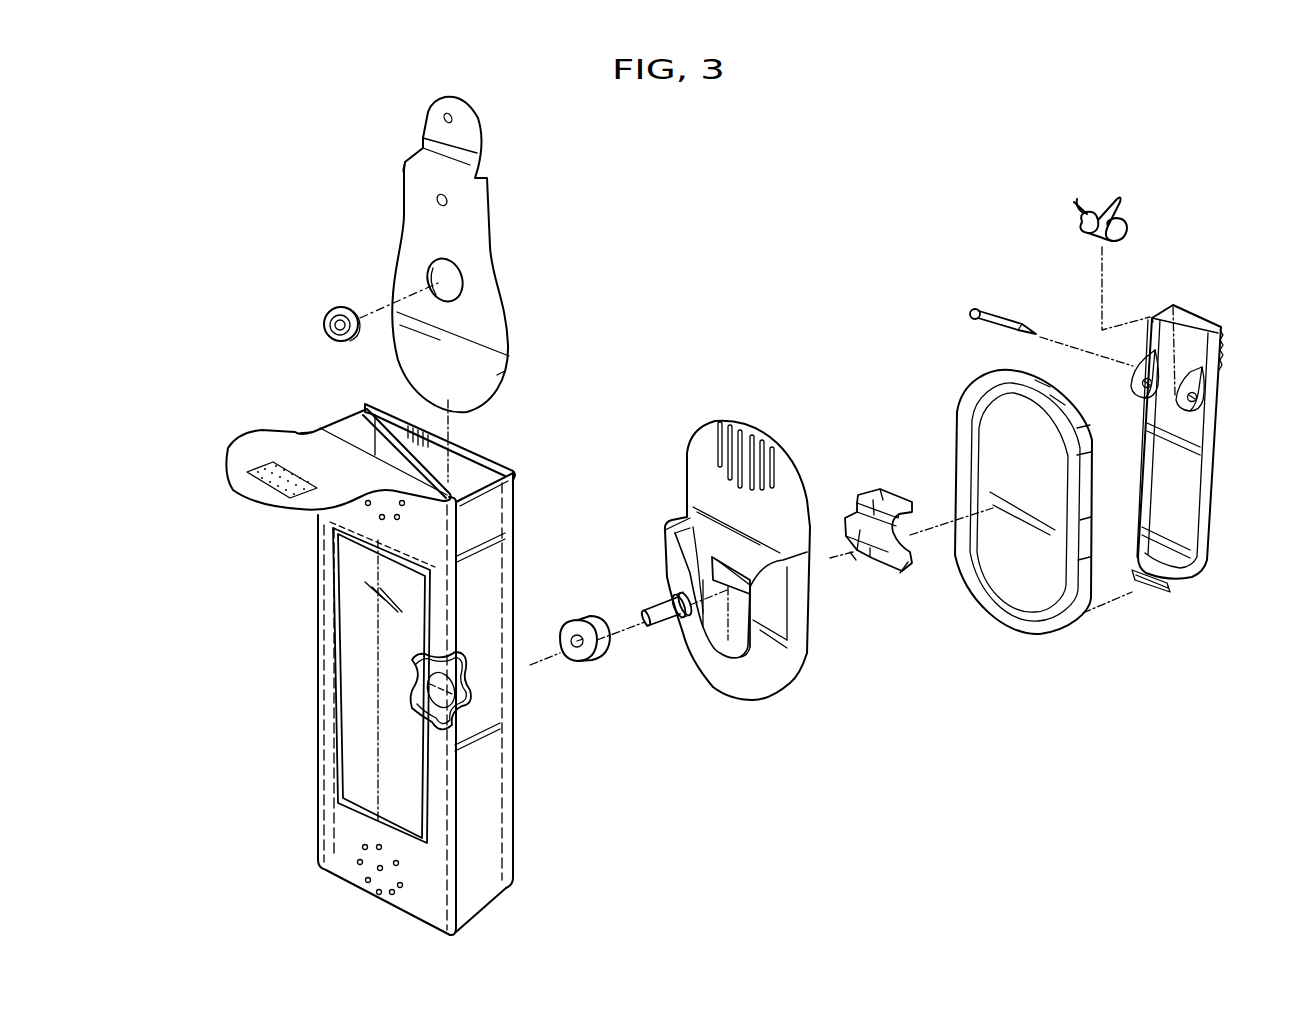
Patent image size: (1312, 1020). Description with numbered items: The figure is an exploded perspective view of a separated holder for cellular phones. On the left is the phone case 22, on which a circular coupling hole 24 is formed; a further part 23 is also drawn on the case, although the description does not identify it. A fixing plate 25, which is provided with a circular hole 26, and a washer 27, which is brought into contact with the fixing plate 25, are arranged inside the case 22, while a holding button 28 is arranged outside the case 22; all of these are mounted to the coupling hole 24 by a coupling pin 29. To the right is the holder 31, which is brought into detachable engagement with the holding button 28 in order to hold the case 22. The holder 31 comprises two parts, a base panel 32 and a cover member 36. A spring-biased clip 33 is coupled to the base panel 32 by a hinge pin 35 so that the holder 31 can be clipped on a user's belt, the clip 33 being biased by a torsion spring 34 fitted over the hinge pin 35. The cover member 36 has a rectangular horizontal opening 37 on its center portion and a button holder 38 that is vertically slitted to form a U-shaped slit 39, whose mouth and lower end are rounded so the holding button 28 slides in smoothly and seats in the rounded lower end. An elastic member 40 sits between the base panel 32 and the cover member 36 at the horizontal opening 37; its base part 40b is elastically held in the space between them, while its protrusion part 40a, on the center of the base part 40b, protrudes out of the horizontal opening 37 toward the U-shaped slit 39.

The phone case 22 is at (315, 688).
The lid 23 is at (236, 470).
The coupling hole 24 is at (432, 712).
The fixing plate 25 is at (398, 223).
The circular hole 26 is at (438, 272).
The washer 27 is at (324, 330).
The holding button 28 is at (595, 665).
The coupling pin 29 is at (645, 610).
The holder 31 is at (1003, 738).
The base panel 32 is at (1048, 622).
The clip 33 is at (1207, 543).
The torsion spring 34 is at (1097, 207).
The hinge pin 35 is at (990, 308).
The cover member 36 is at (791, 686).
The horizontal opening 37 is at (712, 557).
The button holder 38 is at (742, 683).
The U-shaped slit 39 is at (707, 665).
The elastic member 40 is at (873, 490).
The protrusion part 40a is at (874, 563).
The base part 40b is at (915, 540).